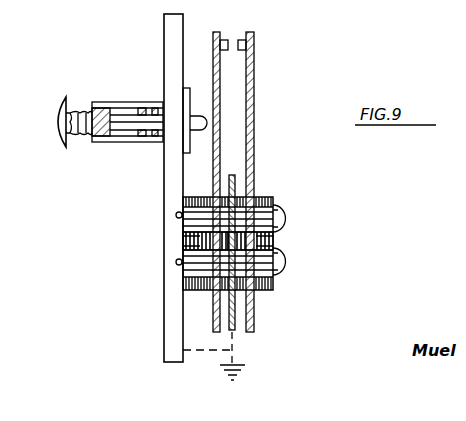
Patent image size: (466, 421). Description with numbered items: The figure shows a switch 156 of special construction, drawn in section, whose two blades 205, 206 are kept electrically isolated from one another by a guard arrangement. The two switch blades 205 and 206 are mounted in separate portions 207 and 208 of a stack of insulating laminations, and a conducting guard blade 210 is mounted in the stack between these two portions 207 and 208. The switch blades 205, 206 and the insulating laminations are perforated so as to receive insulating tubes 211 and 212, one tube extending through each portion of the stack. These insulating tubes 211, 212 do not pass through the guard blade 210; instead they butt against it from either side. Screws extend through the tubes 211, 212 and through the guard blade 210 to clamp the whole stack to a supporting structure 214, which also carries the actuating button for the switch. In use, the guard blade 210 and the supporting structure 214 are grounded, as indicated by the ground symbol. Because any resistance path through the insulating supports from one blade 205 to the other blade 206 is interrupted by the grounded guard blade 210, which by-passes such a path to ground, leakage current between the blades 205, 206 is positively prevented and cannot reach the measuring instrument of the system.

The switch 156 is at (143, 182).
The switch blade 205 is at (64, 100).
The switch blade 206 is at (255, 325).
The portion of stack of insulating laminations 207 is at (213, 298).
The portion of stack of insulating laminations 208 is at (268, 300).
The conducting guard blade 210 is at (235, 332).
The insulating tube 211 is at (183, 238).
The insulating tube 212 is at (273, 238).
The supporting structure 214 is at (173, 336).